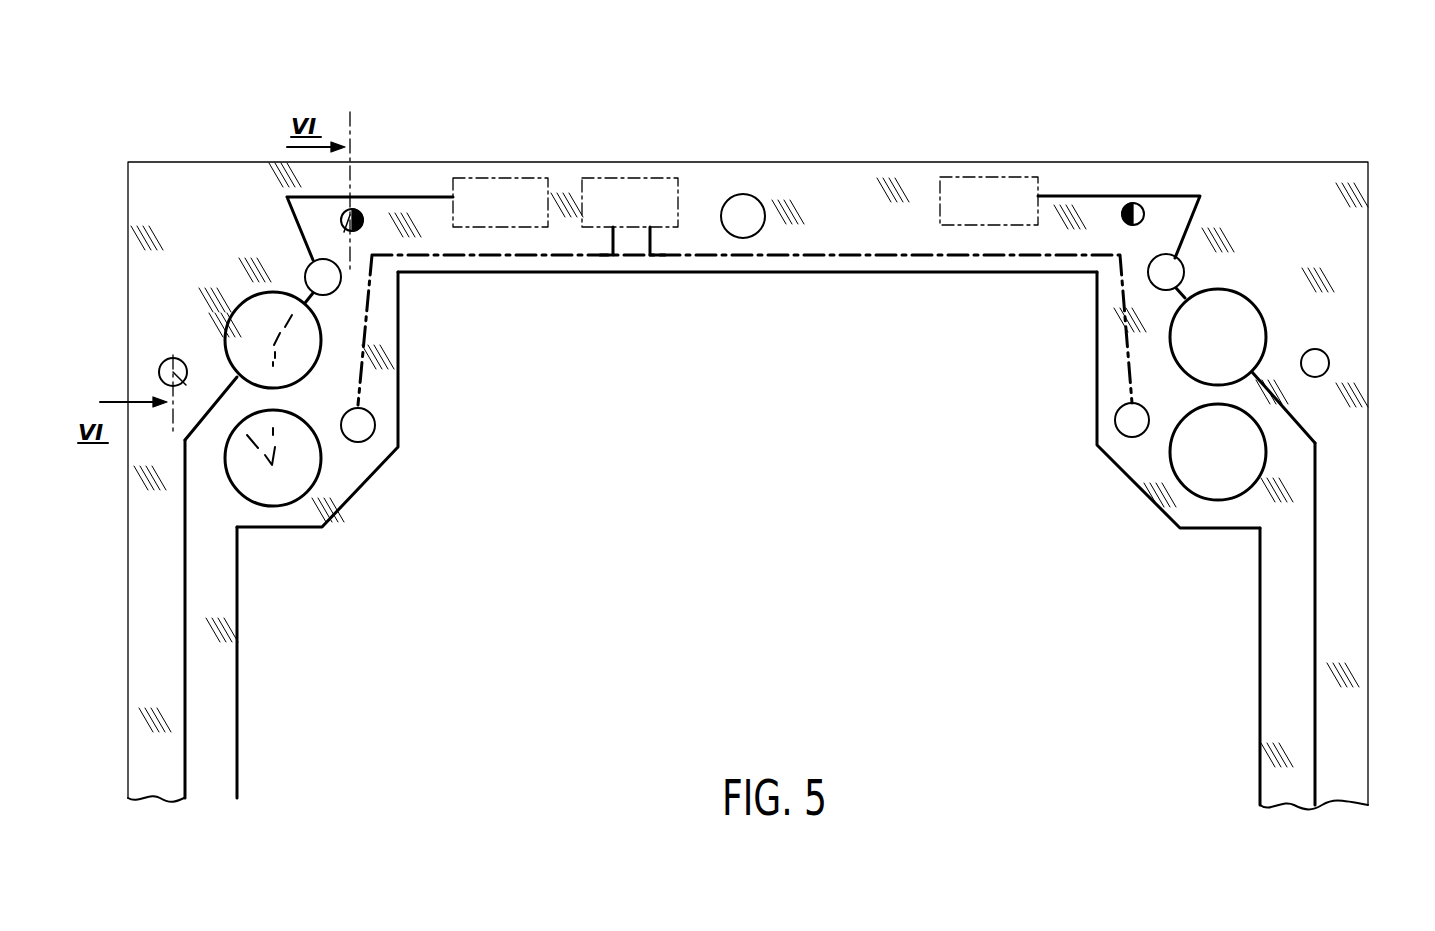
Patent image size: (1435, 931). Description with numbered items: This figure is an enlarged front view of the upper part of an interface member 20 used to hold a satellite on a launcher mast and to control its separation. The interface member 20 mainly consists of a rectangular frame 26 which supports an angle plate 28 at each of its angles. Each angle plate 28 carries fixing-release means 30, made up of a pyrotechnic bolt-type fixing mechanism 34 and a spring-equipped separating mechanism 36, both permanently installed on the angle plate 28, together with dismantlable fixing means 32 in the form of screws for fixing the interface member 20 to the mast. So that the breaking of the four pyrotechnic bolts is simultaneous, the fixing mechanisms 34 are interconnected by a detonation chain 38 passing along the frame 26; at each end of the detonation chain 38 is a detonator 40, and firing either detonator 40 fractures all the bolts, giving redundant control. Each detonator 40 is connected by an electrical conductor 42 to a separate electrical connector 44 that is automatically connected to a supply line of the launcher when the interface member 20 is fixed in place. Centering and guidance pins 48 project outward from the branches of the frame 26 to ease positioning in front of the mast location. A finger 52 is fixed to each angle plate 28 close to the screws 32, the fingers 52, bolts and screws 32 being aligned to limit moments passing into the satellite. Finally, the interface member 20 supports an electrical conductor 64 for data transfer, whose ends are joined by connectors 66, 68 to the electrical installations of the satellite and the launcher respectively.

The interface member 20 is at (202, 135).
The rectangular frame 26 is at (228, 712).
The angle plate 28 is at (345, 485).
The fixing-release means 30 is at (745, 397).
The dismantlable fixing means 32 is at (340, 218).
The fixing mechanism 34 is at (310, 345).
The separating mechanism 36 is at (305, 425).
The detonation chain 38 is at (1308, 725).
The detonator 40 is at (318, 278).
The electrical conductor 42 is at (405, 197).
The electrical connector 44 is at (498, 180).
The centering and guidance pin 48 is at (750, 205).
The finger 52 is at (173, 372).
The electrical conductor 64 is at (665, 258).
The connector 66 is at (630, 178).
The connector 68 is at (360, 428).